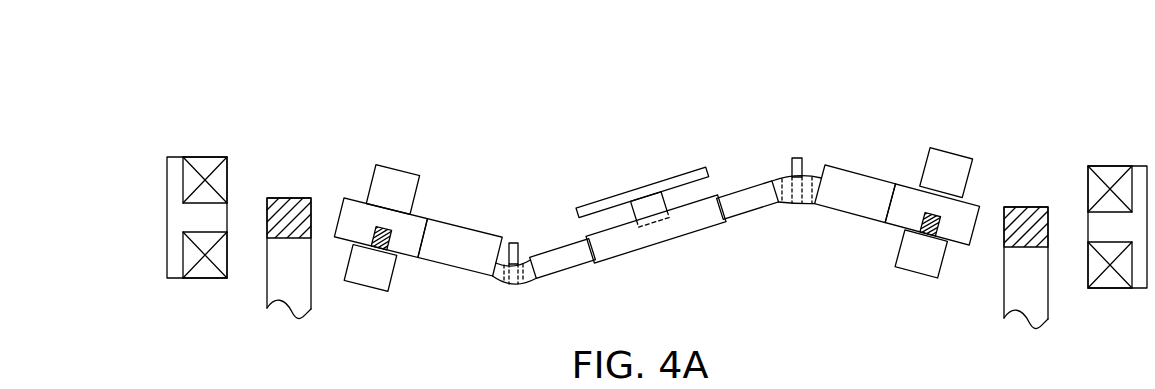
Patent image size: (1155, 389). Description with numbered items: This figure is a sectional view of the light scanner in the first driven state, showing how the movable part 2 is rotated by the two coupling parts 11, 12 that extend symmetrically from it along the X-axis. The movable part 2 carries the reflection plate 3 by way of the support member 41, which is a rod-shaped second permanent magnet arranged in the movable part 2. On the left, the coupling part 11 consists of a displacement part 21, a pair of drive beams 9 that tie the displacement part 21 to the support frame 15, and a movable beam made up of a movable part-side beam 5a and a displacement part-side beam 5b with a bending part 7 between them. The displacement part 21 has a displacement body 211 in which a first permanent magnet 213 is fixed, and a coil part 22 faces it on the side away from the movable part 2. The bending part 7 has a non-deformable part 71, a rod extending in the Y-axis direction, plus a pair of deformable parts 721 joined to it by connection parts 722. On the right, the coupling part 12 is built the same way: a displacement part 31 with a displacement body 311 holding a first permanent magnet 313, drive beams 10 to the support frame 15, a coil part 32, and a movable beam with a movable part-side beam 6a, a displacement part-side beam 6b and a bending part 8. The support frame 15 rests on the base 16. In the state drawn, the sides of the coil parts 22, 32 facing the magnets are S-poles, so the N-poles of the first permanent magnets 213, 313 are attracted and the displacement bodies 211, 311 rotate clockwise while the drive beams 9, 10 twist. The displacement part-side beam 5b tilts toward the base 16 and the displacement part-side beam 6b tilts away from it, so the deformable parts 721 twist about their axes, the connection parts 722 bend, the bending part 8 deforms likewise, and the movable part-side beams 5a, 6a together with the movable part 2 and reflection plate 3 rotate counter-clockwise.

The movable part 2 is at (703, 222).
The reflection plate 3 is at (701, 177).
The support member 41 is at (650, 204).
The movable part-side beam 5a is at (575, 266).
The displacement part-side beam 5b is at (455, 234).
The movable part-side beam 6a is at (750, 199).
The displacement part-side beam 6b is at (845, 177).
The bending part 7 is at (518, 239).
The non-deformable part 71 is at (513, 285).
The deformable part 721 is at (496, 280).
The connection part 722 is at (501, 262).
The bending part 8 is at (799, 155).
The drive beam 9 is at (388, 250).
The drive beam 10 is at (938, 232).
The coupling part 11 is at (511, 206).
The coupling part 12 is at (795, 118).
The support frame 15 is at (286, 197).
The base 16 is at (285, 300).
The displacement part 21 is at (414, 206).
The displacement body 211 is at (350, 204).
The first permanent magnet 213 is at (397, 162).
The coil part 22 is at (208, 154).
The displacement part 31 is at (897, 188).
The displacement body 311 is at (900, 192).
The first permanent magnet 313 is at (950, 150).
The coil part 32 is at (1113, 162).